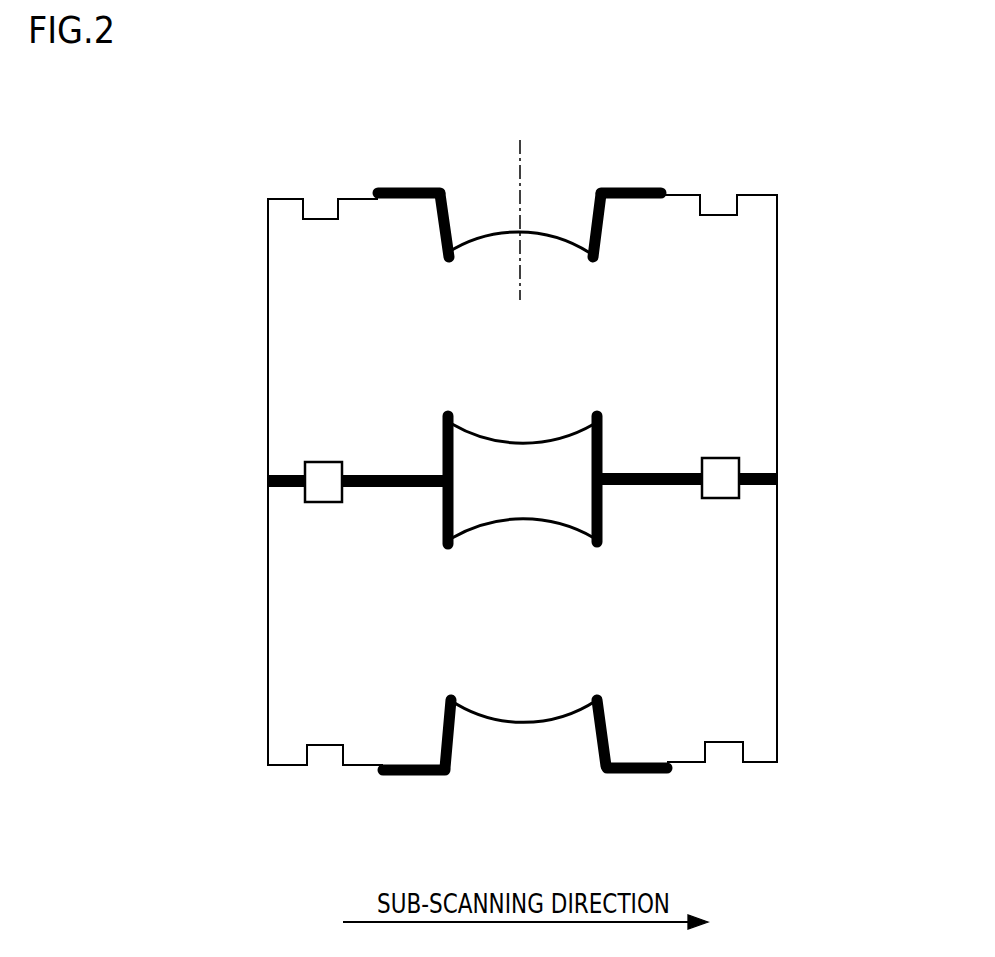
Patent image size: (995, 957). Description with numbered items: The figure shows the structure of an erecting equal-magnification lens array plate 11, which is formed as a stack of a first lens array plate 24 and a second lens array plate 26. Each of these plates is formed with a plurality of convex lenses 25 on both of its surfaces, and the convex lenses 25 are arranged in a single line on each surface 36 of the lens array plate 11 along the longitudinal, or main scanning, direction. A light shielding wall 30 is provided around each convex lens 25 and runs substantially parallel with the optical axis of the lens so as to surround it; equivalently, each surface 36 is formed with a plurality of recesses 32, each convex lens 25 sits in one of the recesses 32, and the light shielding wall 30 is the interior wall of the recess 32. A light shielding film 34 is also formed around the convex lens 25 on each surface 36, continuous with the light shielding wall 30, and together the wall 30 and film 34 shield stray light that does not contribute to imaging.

The erecting equal-magnification lens array plate 11 is at (685, 158).
The first lens array plate 24 is at (755, 630).
The second lens array plate 26 is at (755, 320).
The convex lens 25 is at (558, 235).
The light shielding wall 30 is at (452, 220).
The recess 32 is at (493, 222).
The light shielding film 34 is at (398, 190).
The surface 36 is at (358, 198).